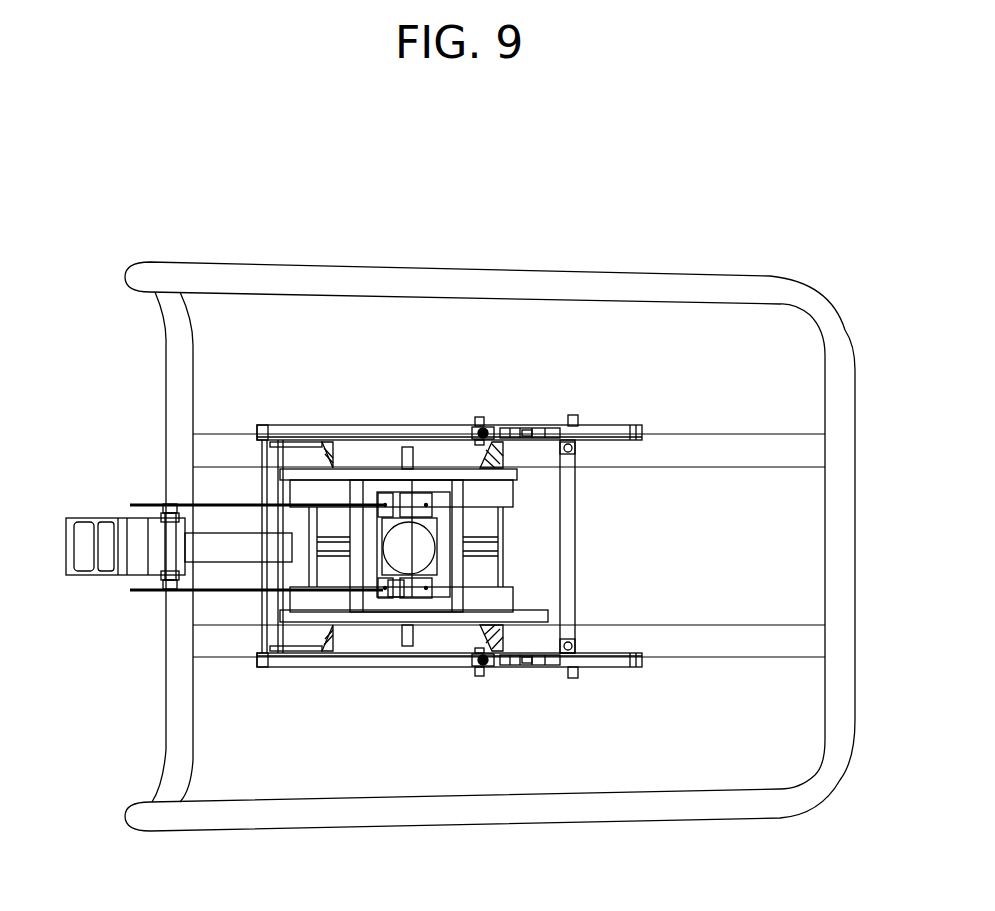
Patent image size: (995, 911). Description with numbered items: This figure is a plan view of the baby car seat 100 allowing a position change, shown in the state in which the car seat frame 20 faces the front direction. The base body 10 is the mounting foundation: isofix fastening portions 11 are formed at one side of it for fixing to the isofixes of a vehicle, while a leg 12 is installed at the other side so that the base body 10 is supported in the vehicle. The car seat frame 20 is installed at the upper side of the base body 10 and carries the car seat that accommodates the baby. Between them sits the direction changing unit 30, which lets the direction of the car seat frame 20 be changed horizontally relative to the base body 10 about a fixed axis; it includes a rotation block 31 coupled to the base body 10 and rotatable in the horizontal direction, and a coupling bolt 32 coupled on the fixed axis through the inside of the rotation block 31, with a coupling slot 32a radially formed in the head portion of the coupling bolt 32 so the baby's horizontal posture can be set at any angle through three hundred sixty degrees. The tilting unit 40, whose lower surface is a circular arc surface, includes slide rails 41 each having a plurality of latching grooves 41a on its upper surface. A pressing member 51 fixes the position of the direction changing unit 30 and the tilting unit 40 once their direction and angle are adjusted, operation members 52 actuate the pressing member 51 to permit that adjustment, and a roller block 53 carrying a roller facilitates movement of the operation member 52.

The baby car seat 100 is at (316, 213).
The car seat frame 20 is at (677, 293).
The isofix fastening portions 11 is at (620, 428).
The leg 12 is at (85, 522).
The operation members 52 is at (206, 585).
The pressing member 51 is at (407, 534).
The tilting unit 40 is at (496, 501).
The latching grooves 41a is at (457, 478).
The slide rails 41 is at (516, 519).
The rotation block 31 is at (375, 563).
The coupling bolt 32 is at (397, 562).
The coupling slot 32a is at (417, 557).
The roller block 53 is at (390, 597).
The direction changing unit 30 is at (373, 633).
The base body 10 is at (540, 675).